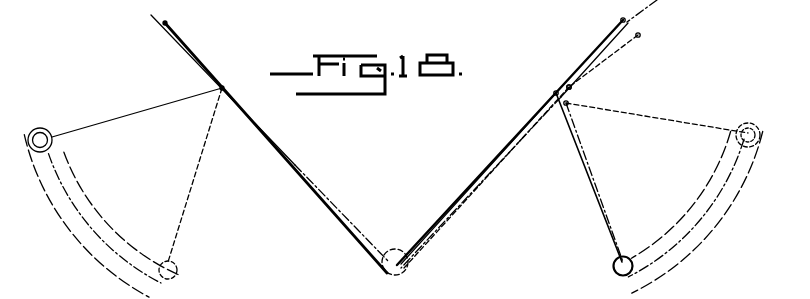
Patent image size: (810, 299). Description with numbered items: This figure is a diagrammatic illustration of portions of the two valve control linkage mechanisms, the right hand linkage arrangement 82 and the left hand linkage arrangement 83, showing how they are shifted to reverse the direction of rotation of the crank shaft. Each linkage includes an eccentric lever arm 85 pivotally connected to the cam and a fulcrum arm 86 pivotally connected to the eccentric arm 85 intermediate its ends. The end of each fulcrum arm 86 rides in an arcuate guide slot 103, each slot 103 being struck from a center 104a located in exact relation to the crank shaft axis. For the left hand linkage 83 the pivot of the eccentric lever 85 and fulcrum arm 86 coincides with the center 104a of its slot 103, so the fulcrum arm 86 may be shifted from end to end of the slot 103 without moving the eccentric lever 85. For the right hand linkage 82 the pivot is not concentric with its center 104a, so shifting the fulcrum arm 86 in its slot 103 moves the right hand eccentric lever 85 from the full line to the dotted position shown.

The linkage arrangement 82 is at (488, 150).
The linkage arrangement 83 is at (303, 161).
The eccentric lever arm 85 is at (310, 188).
The fulcrum arm 86 is at (118, 119).
The arcuate groove 103 is at (97, 217).
The center 104a is at (222, 88).